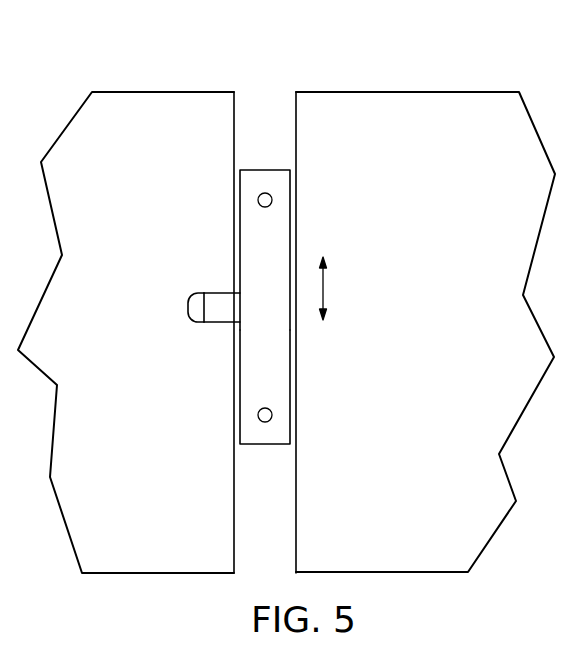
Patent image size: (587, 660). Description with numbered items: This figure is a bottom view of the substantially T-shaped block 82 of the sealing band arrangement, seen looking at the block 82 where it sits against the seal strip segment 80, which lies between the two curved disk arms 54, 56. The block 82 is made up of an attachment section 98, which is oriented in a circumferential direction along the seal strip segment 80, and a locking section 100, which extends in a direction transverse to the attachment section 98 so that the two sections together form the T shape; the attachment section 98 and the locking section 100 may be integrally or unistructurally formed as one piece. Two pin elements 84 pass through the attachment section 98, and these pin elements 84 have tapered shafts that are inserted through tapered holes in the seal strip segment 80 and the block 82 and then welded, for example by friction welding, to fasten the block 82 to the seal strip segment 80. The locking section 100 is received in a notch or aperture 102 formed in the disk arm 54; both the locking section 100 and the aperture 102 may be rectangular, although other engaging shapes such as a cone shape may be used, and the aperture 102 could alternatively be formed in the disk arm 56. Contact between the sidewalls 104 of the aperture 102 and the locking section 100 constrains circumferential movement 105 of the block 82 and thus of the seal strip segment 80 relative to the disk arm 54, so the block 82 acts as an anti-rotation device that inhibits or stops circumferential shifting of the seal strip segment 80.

The disk arm 54 is at (163, 120).
The disk arm 56 is at (362, 107).
The seal strip segment 80 is at (277, 135).
The block 82 is at (283, 243).
The pin element 84 is at (272, 200).
The attachment section 98 is at (283, 356).
The locking section 100 is at (218, 305).
The aperture 102 is at (192, 312).
The sidewalls 104 is at (226, 292).
The circumferential movement 105 is at (323, 288).